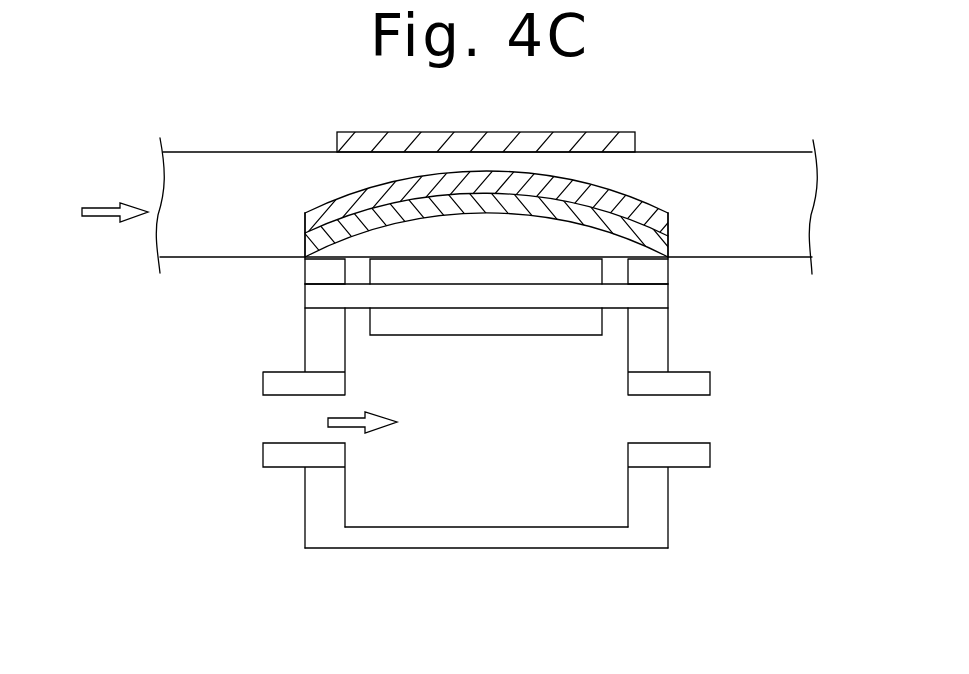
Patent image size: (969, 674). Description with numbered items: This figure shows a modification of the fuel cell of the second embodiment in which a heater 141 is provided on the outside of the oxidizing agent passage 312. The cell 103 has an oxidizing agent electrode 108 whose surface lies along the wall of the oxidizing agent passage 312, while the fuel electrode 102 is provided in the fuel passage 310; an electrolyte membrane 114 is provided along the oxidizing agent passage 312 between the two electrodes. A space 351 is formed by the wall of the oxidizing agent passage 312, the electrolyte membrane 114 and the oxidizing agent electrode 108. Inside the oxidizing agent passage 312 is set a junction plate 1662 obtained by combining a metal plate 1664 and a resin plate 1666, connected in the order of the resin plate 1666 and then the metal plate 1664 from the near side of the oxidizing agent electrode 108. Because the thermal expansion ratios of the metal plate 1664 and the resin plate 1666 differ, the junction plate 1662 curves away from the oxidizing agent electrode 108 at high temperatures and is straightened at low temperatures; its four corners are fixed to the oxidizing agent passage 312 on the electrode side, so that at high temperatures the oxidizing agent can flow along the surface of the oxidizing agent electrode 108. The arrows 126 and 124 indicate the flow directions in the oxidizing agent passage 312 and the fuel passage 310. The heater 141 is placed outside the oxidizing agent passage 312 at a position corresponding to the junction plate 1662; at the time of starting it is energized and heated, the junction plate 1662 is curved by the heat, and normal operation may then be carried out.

The pressure sensor device 103 is at (482, 382).
The fuel passage 310 is at (275, 415).
The oxidizing agent passage 312 is at (207, 188).
The heater 141 is at (368, 130).
The direction of motion arrow 126 is at (115, 195).
The direction of motion arrow 124 is at (344, 424).
The oxidizing agent electrode 108 is at (542, 267).
The junction plate 1662 is at (528, 161).
The metal plate 1664 is at (657, 216).
The resin plate 1666 is at (669, 238).
The space 351 is at (347, 273).
The electrolyte membrane 114 is at (663, 298).
The fuel electrode 102 is at (590, 322).